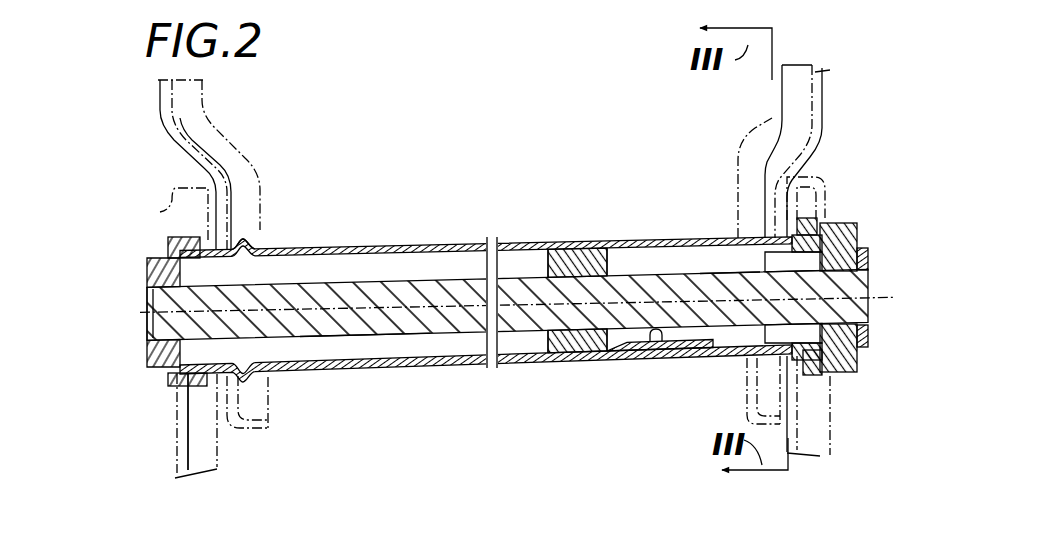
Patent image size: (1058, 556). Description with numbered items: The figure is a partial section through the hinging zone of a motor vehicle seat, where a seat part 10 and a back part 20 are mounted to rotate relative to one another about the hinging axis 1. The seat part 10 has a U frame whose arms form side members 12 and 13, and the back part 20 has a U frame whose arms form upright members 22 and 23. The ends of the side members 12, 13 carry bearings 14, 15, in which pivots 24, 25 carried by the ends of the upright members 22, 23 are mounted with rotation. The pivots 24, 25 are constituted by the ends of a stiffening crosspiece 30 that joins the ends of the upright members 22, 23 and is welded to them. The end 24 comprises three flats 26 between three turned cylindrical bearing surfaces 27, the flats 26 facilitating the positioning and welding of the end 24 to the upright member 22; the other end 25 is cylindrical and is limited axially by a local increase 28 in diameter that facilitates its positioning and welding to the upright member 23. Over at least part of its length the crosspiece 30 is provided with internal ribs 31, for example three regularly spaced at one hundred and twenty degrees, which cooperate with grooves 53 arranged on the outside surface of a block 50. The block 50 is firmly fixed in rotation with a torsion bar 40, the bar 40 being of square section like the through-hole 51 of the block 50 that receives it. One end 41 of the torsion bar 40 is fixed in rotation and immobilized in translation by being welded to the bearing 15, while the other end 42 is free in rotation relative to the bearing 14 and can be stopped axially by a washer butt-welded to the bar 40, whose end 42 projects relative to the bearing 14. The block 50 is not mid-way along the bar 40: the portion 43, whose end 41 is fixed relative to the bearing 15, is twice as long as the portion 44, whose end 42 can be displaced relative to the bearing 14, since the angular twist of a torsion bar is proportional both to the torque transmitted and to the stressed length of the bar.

The hinging axis 1 is at (385, 325).
The seat part 10 is at (172, 439).
The side member 12 is at (818, 455).
The side member 13 is at (183, 412).
The bearing 14 is at (850, 233).
The bearing 15 is at (145, 268).
The back part 20 is at (178, 150).
The upright member 22 is at (768, 122).
The upright member 23 is at (215, 150).
The pivot 24 is at (783, 352).
The pivot 25 is at (160, 212).
The flats 26 is at (826, 372).
The turned cylindrical bearing surfaces 27 is at (805, 232).
The local increase in diameter 28 is at (252, 245).
The stiffening crosspiece 30 is at (348, 243).
The internal ribs 31 is at (653, 352).
The torsion bar 40 is at (400, 278).
The end of torsion bar 41 is at (147, 320).
The end of torsion bar 42 is at (850, 298).
The portion of torsion bar 43 is at (333, 325).
The portion of torsion bar 44 is at (718, 290).
The block 50 is at (538, 255).
The through-hole 51 is at (578, 262).
The grooves 53 is at (578, 358).